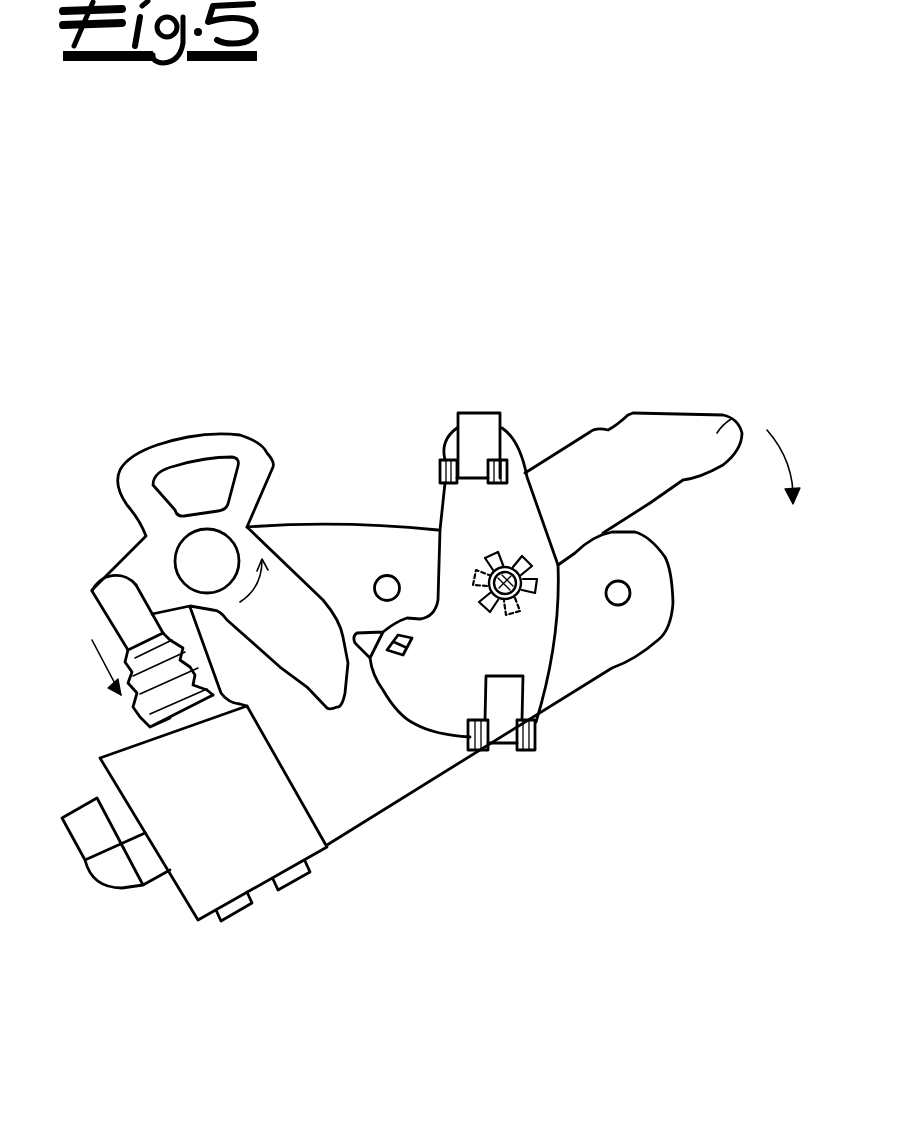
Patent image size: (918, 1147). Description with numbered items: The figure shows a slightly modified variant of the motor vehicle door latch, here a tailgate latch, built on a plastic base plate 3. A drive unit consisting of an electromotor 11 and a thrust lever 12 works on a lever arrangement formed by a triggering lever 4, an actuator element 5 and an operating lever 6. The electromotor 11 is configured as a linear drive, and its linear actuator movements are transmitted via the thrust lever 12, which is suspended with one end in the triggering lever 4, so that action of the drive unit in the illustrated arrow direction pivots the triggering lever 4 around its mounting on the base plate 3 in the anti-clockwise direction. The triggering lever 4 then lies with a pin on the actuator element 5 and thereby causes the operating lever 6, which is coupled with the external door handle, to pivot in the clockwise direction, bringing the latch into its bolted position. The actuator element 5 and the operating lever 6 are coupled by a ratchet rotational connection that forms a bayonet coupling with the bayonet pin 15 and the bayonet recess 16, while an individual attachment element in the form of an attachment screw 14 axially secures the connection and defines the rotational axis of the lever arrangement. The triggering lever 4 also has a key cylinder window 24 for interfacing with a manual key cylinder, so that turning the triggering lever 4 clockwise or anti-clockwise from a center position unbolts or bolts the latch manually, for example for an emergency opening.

The base plate 3 is at (388, 793).
The triggering lever 4 is at (137, 475).
The actuator element 5 is at (538, 668).
The operating lever 6 is at (723, 415).
The electromotor 11 is at (203, 898).
The thrust lever 12 is at (110, 612).
The attachment screw 14 is at (504, 572).
The bayonet pin 15 is at (540, 607).
The bayonet recess 16 is at (505, 583).
The key cylinder window 24 is at (200, 472).